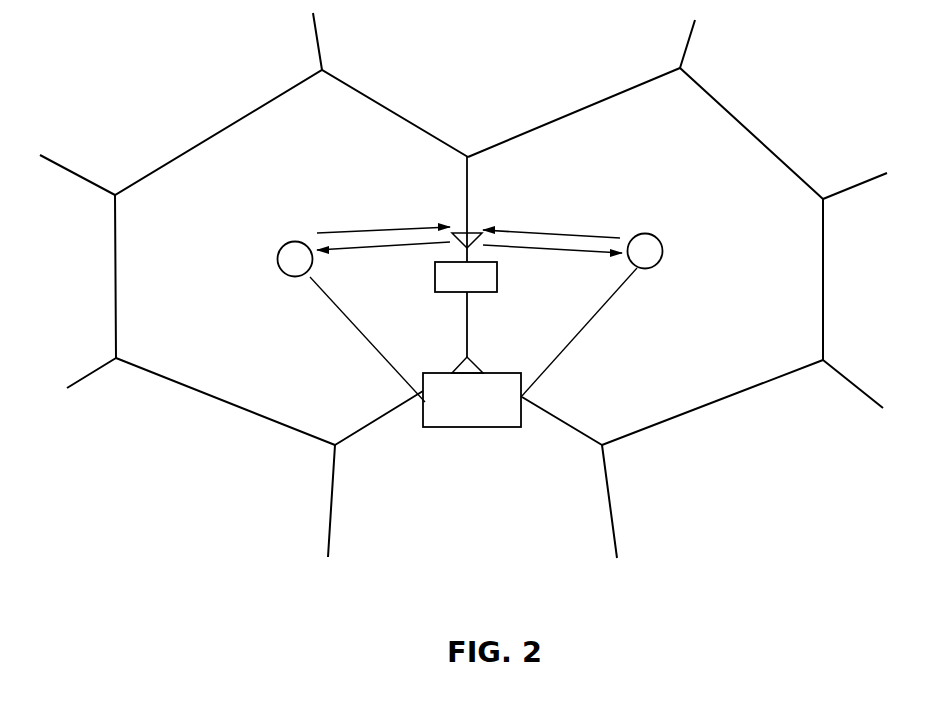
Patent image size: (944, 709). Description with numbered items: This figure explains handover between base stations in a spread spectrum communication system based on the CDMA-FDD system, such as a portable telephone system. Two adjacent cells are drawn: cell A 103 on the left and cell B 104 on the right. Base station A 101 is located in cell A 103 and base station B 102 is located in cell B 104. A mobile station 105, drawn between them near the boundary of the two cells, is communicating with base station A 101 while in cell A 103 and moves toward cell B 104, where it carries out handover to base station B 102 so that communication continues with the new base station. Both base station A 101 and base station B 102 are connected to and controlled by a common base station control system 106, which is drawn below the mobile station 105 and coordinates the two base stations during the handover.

The base station A 101 is at (293, 242).
The base station B 102 is at (643, 233).
The cell A 103 is at (192, 162).
The cell B 104 is at (749, 152).
The mobile station 105 is at (455, 261).
The base station control system 106 is at (518, 422).